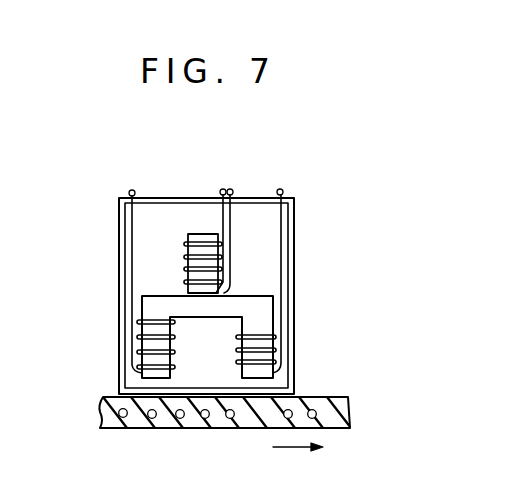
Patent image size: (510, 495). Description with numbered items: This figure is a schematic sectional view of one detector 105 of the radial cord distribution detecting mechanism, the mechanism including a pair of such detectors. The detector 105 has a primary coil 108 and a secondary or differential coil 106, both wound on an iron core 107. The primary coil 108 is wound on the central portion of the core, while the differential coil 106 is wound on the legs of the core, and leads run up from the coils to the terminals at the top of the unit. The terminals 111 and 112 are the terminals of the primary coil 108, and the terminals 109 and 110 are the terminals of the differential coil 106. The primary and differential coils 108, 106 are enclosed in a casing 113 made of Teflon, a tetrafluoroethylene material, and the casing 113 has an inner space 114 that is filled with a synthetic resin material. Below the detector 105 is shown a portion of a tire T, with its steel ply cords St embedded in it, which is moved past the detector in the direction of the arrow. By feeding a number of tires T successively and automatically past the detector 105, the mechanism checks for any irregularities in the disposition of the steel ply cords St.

The detector 105 is at (294, 298).
The secondary or differential coil 106 is at (138, 343).
The iron core 107 is at (157, 298).
The primary coil 108 is at (186, 244).
The terminal of the differential coil 109 is at (281, 189).
The terminal of the differential coil 110 is at (132, 190).
The terminal of the primary coil 111 is at (240, 175).
The terminal of the primary coil 112 is at (222, 189).
The casing 113 is at (296, 343).
The inner space 114 is at (262, 226).
The tire T is at (323, 397).
The steel ply cords St is at (123, 419).